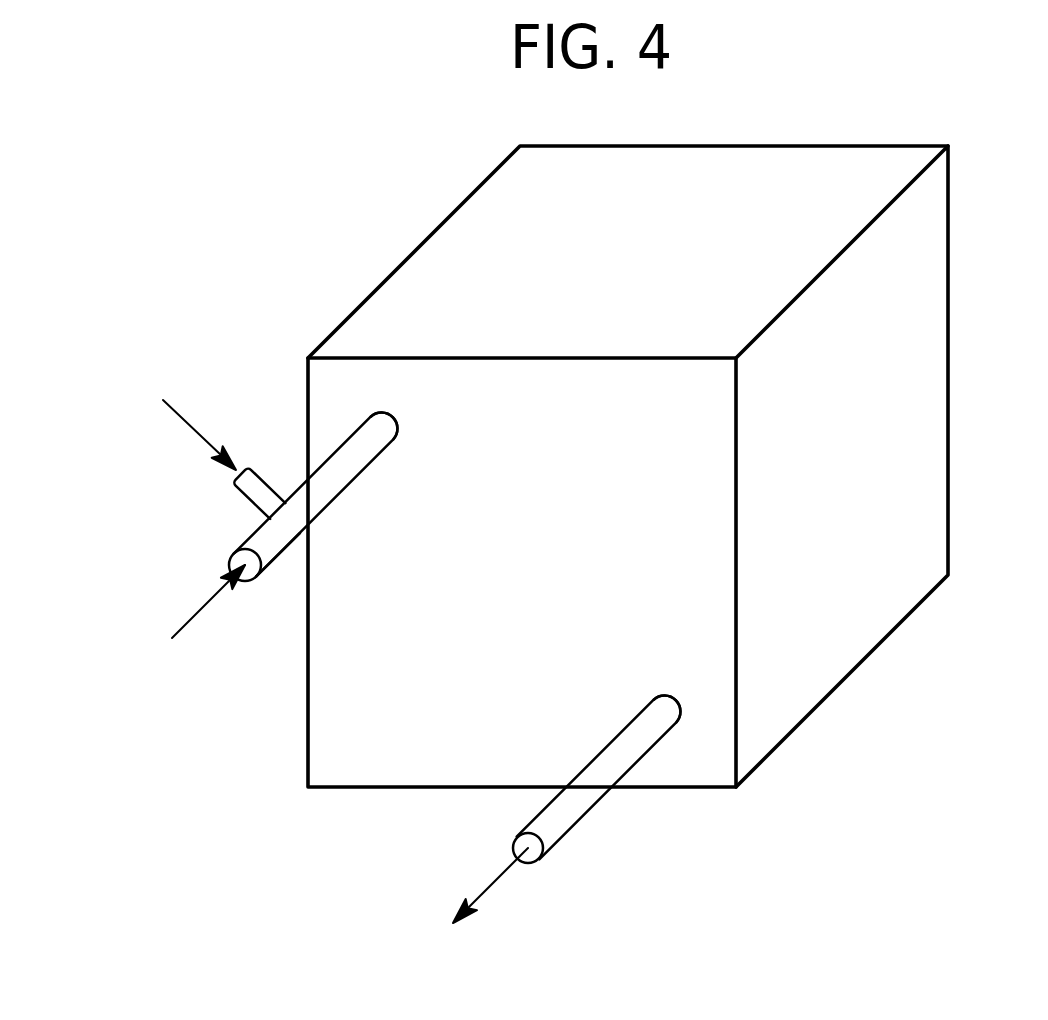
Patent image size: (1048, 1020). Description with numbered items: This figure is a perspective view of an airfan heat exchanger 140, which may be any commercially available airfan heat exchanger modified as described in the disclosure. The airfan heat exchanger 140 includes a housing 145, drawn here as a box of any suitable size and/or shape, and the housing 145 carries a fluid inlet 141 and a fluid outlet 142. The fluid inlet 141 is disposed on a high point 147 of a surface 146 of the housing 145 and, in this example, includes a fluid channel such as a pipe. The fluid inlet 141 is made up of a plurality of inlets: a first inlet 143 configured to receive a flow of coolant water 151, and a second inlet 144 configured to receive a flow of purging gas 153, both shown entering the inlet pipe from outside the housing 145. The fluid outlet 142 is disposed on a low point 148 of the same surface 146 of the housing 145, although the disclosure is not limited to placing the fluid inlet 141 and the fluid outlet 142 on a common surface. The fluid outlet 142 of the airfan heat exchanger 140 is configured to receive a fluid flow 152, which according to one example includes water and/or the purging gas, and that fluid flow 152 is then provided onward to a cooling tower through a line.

The airfan heat exchanger 140 is at (196, 305).
The fluid inlet 141 is at (355, 462).
The fluid outlet 142 is at (570, 813).
The first inlet 143 is at (262, 539).
The second inlet 144 is at (246, 494).
The housing 145 is at (949, 358).
The surface 146 is at (333, 710).
The high point 147 is at (392, 428).
The low point 148 is at (676, 701).
The flow of coolant water 151 is at (193, 617).
The fluid flow 152 is at (494, 882).
The flow of purging gas 153 is at (181, 421).